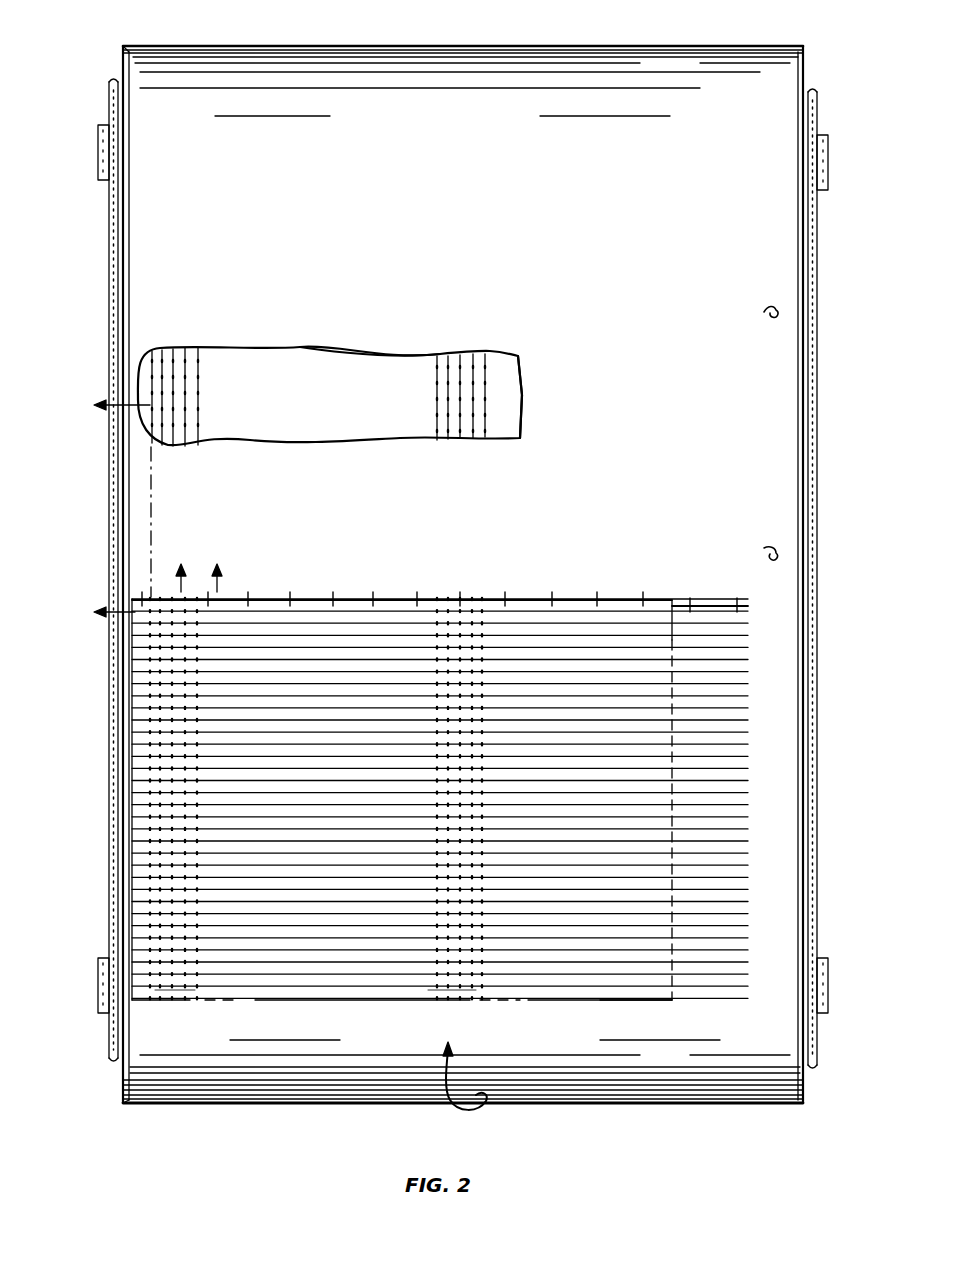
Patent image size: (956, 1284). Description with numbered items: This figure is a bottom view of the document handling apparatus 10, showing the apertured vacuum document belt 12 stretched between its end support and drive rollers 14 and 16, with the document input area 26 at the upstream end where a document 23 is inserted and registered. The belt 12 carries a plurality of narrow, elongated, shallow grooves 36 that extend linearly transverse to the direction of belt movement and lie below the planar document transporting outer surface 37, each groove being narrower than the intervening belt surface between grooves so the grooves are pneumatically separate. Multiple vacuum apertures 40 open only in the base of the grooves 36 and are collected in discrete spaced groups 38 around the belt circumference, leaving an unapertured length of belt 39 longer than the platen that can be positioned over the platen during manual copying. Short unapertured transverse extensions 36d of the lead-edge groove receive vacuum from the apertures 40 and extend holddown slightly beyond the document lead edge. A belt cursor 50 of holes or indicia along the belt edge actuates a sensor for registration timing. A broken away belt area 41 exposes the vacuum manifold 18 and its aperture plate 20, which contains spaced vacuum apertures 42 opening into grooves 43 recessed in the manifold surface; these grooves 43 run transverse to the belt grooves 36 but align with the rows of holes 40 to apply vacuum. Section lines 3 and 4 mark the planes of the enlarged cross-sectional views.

The document handling apparatus 10 is at (659, 44).
The document belt 12 is at (424, 86).
The end support and drive roller 14 is at (122, 1068).
The end support and drive roller 16 is at (124, 49).
The vacuum manifold 18 is at (277, 380).
The aperture plate 20 is at (372, 374).
The document 23 is at (640, 1000).
The document input area 26 is at (344, 1060).
The grooves 36 is at (740, 781).
The transverse groove extensions 36d is at (374, 598).
The document transporting outer surface 37 is at (125, 750).
The hole and groove pattern group 38 is at (529, 590).
The unapertured length of belt 39 is at (140, 273).
The vacuum apertures 40 is at (188, 995).
The broken away belt area 41 is at (512, 370).
The manifold vacuum apertures 42 is at (200, 377).
The manifold grooves 43 is at (200, 420).
The belt cursor 50 is at (755, 433).
The section line 3- 3 is at (113, 510).
The section line 4- 4 is at (197, 567).